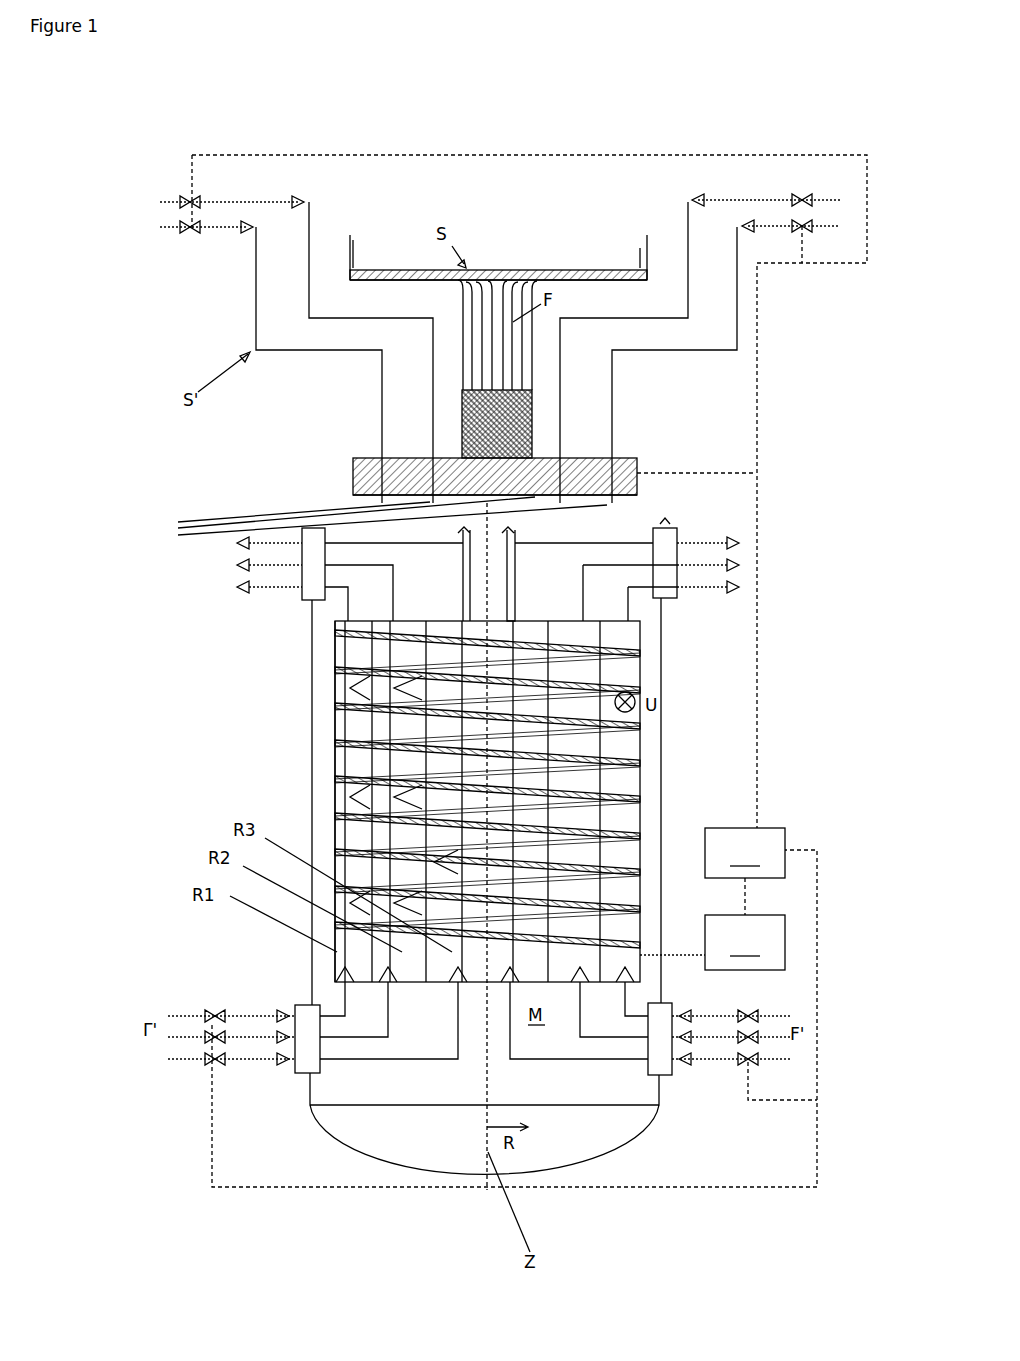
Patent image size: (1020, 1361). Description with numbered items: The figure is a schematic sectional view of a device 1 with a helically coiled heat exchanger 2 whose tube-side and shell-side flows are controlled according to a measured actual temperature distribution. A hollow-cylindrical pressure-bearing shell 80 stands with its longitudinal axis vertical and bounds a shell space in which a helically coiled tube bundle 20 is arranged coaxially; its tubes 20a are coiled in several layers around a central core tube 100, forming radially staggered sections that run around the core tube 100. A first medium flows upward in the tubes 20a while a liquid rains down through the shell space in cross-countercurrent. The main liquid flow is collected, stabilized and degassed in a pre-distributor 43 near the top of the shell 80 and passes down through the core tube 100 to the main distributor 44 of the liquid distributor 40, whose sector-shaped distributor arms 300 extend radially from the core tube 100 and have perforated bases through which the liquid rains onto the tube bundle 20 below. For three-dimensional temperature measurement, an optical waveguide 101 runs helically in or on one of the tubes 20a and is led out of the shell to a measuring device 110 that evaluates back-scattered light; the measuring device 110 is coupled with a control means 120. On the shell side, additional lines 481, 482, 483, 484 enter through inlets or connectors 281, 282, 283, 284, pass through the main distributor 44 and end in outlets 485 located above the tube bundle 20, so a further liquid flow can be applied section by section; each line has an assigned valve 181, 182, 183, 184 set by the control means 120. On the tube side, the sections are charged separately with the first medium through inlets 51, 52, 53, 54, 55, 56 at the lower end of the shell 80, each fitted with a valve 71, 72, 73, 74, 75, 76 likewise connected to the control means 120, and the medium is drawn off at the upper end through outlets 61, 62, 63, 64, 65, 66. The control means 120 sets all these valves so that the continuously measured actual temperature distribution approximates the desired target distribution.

The device 1 is at (175, 492).
The heat exchanger 2 is at (785, 733).
The tube bundle 20 is at (355, 758).
The tubes 20a is at (337, 781).
The liquid distributor 40 is at (558, 258).
The pre-distributor 43 is at (356, 258).
The main distributor 44 is at (333, 459).
The inlet 51 is at (282, 1064).
The inlet 52 is at (279, 1033).
The inlet 53 is at (285, 1010).
The inlet 54 is at (690, 1012).
The inlet 55 is at (690, 1041).
The inlet 56 is at (684, 1064).
The outlet 61 is at (236, 546).
The outlet 62 is at (236, 568).
The outlet 63 is at (236, 590).
The outlet 64 is at (741, 545).
The outlet 65 is at (741, 567).
The outlet 66 is at (741, 590).
The valve 71 is at (212, 1012).
The valve 72 is at (211, 1034).
The valve 73 is at (208, 1063).
The valve 74 is at (756, 1011).
The valve 75 is at (756, 1034).
The valve 76 is at (756, 1058).
The pressure-bearing shell 80 is at (310, 667).
The core tube 100 is at (462, 300).
The optical waveguide 101 is at (576, 796).
The measuring device 110 is at (712, 924).
The control means 120 is at (745, 853).
The valve 181 is at (170, 203).
The valve 182 is at (188, 229).
The valve 183 is at (800, 198).
The valve 184 is at (796, 226).
The inlet/connector 281 is at (300, 196).
The inlet/connector 282 is at (246, 220).
The inlet/connector 283 is at (694, 198).
The inlet/connector 284 is at (750, 232).
The distributor arms 300 is at (352, 468).
The additional line 481 is at (356, 320).
The additional line 482 is at (254, 303).
The additional line 483 is at (632, 322).
The additional line 484 is at (624, 352).
The outlet 485 is at (372, 519).